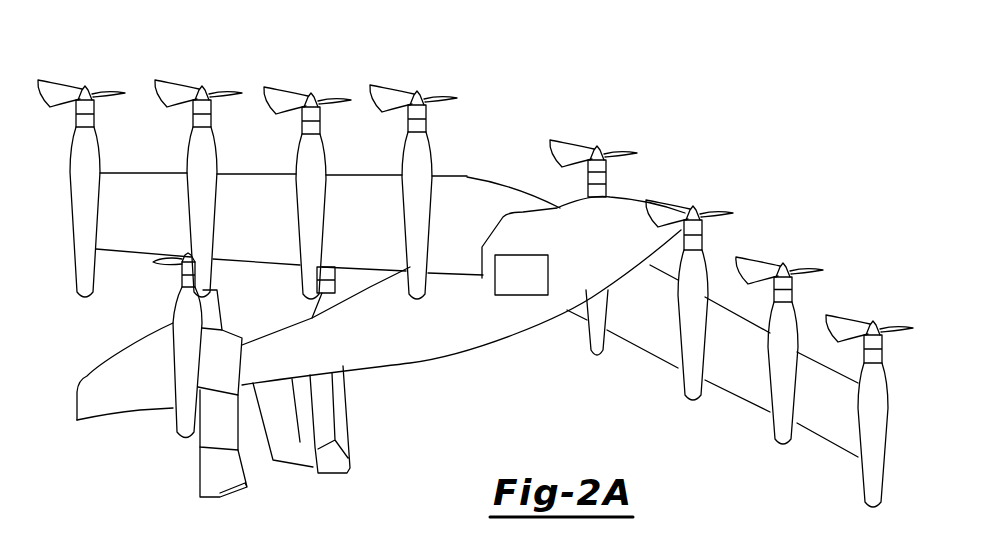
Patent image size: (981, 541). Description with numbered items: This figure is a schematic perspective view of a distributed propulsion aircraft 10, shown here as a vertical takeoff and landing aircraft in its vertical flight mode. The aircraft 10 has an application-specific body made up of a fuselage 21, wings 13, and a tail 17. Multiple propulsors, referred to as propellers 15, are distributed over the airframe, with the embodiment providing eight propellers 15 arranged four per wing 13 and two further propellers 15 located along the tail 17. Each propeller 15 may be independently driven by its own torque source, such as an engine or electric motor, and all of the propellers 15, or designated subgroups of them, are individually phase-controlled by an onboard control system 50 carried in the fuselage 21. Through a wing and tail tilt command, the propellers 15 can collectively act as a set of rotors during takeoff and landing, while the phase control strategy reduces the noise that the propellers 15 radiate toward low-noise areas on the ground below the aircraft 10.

The aircraft 10 is at (712, 122).
The wing 13 is at (468, 177).
The propellers 15 is at (452, 57).
The tail 17 is at (140, 388).
The fuselage 21 is at (410, 364).
The onboard control system 50 is at (521, 275).